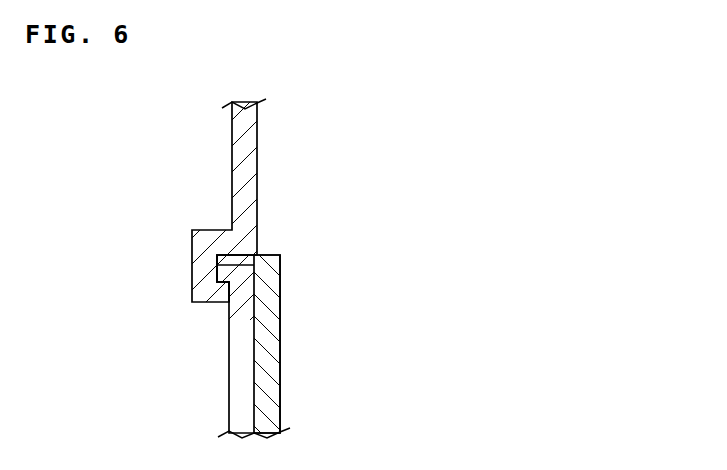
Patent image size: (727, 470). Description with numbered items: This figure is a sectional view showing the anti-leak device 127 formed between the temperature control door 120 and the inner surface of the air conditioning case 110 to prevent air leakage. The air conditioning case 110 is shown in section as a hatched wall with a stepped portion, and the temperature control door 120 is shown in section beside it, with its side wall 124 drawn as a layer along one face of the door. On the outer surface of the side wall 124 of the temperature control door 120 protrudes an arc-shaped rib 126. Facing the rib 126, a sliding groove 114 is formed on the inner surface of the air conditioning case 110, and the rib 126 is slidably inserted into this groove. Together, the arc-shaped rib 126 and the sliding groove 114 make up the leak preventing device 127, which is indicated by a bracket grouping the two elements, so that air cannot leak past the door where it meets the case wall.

The air conditioning case 110 is at (232, 166).
The temperature control door 120 is at (290, 391).
The side wall 124 is at (280, 343).
The arc-shaped rib 126 is at (213, 265).
The sliding groove 114 is at (210, 292).
The anti-leak device 127 is at (95, 263).